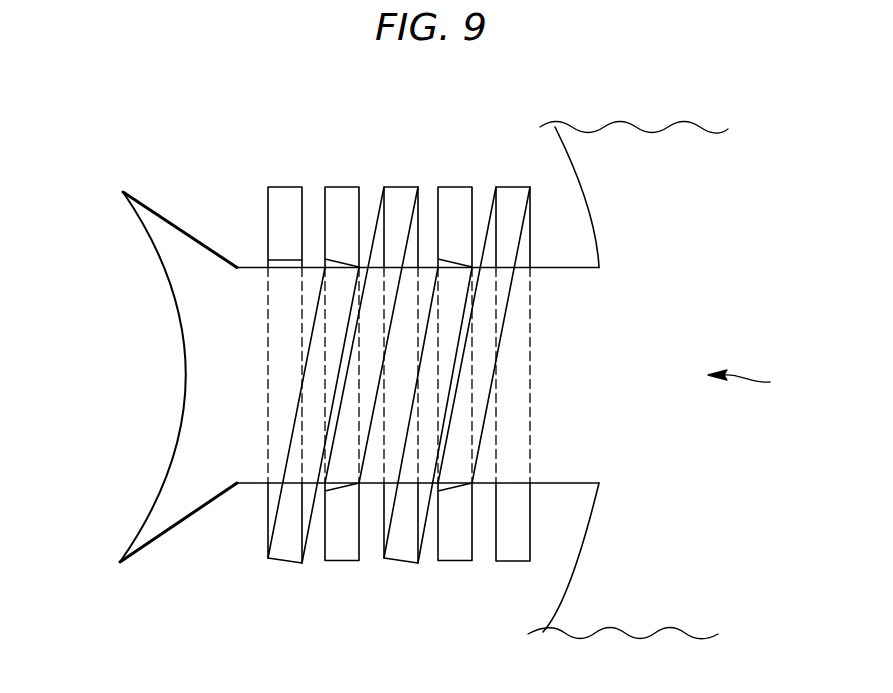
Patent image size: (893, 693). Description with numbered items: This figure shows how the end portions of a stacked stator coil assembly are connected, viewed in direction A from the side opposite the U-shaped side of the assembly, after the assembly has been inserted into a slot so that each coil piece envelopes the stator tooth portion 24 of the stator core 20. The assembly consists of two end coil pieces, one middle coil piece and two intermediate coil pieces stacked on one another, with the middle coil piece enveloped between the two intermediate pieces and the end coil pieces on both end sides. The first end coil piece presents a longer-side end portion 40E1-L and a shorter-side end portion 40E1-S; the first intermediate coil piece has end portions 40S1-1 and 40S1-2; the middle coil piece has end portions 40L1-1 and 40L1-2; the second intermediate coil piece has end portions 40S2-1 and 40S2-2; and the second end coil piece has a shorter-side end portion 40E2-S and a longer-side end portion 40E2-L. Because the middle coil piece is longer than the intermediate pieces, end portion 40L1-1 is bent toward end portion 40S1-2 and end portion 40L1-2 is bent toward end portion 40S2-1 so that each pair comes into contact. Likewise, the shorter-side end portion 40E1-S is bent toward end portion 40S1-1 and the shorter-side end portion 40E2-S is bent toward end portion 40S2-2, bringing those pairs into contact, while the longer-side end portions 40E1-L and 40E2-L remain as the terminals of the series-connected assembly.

The stator core 20 is at (627, 145).
The stator tooth portion 24 is at (222, 383).
The viewing direction arrow A is at (748, 378).
The longer-side end portion of end coil piece 40E1 40E1-L is at (283, 195).
The shorter-side end portion of end coil piece 40E1 40E1-S is at (338, 288).
The end portion of intermediate coil piece 40S1 40S1-1 is at (343, 193).
The end portion of intermediate coil piece 40S1 40S1-2 is at (343, 553).
The end portion of intermediate coil piece 40S2 40S2-1 is at (458, 193).
The end portion of intermediate coil piece 40S2 40S2-2 is at (448, 553).
The end portion of middle coil piece 40L1 40L1-1 is at (338, 465).
The end portion of middle coil piece 40L1 40L1-2 is at (457, 285).
The shorter-side end portion of end coil piece 40E2 40E2-S is at (457, 463).
The longer-side end portion of end coil piece 40E2 40E2-L is at (512, 553).